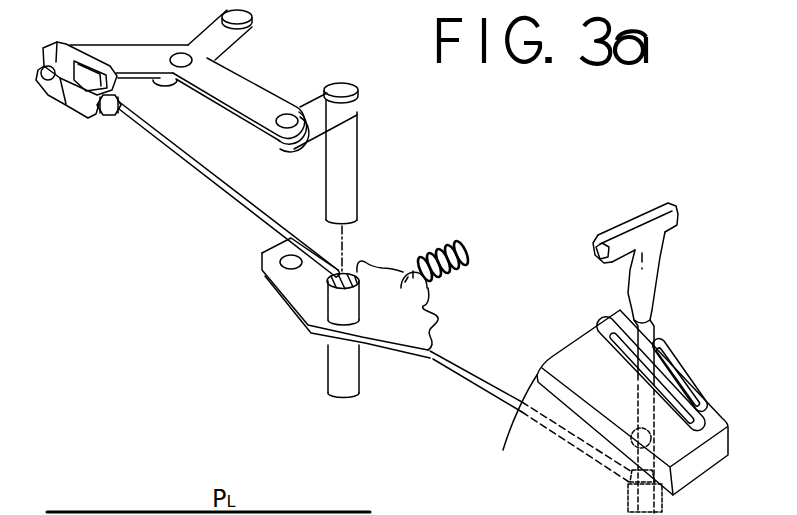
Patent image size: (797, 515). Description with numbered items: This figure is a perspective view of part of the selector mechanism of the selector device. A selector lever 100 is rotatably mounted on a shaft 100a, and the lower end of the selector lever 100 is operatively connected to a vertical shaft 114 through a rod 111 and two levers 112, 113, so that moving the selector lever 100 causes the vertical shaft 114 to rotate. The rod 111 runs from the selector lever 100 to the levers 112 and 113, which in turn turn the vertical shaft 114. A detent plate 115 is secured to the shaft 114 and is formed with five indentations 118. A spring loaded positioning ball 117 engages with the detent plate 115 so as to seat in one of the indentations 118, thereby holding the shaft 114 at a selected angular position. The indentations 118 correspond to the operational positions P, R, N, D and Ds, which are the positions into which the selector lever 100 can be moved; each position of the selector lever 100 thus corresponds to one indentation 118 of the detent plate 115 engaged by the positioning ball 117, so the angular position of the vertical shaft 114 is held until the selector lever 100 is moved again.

The selector lever 100 is at (633, 222).
The shaft 100a is at (618, 464).
The rod 111 is at (170, 152).
The lever 112 is at (145, 13).
The lever 113 is at (311, 102).
The vertical shaft 114 is at (353, 160).
The detent plate 115 is at (384, 333).
The spring loaded positioning ball 117 is at (412, 271).
The indentations 118 is at (428, 300).